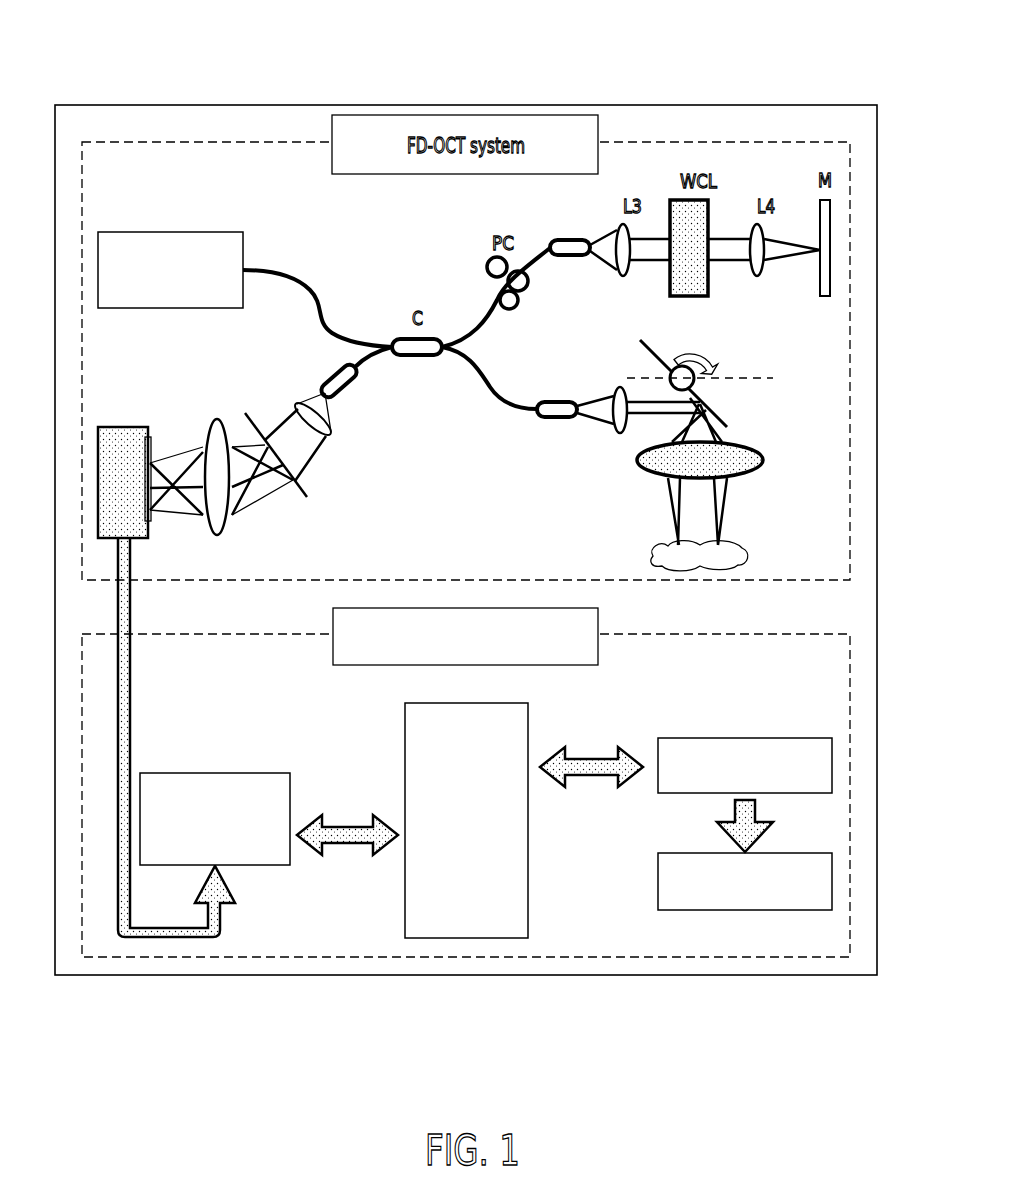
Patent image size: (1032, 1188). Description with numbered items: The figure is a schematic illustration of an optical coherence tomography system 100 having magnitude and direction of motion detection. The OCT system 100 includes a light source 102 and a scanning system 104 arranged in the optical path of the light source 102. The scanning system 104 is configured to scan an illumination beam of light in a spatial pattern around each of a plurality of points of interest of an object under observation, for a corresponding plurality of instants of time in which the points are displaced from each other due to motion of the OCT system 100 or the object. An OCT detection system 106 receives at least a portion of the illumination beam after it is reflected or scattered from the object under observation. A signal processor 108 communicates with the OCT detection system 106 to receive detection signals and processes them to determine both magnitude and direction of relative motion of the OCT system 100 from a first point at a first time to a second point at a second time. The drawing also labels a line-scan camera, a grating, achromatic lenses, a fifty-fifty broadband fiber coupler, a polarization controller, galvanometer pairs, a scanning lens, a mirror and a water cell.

The optical coherence tomography (OCT) system 100 is at (727, 55).
The light source 102 is at (200, 232).
The scanning system 104 is at (745, 357).
The OCT detection system 106 is at (180, 393).
The signal processor 108 is at (832, 634).